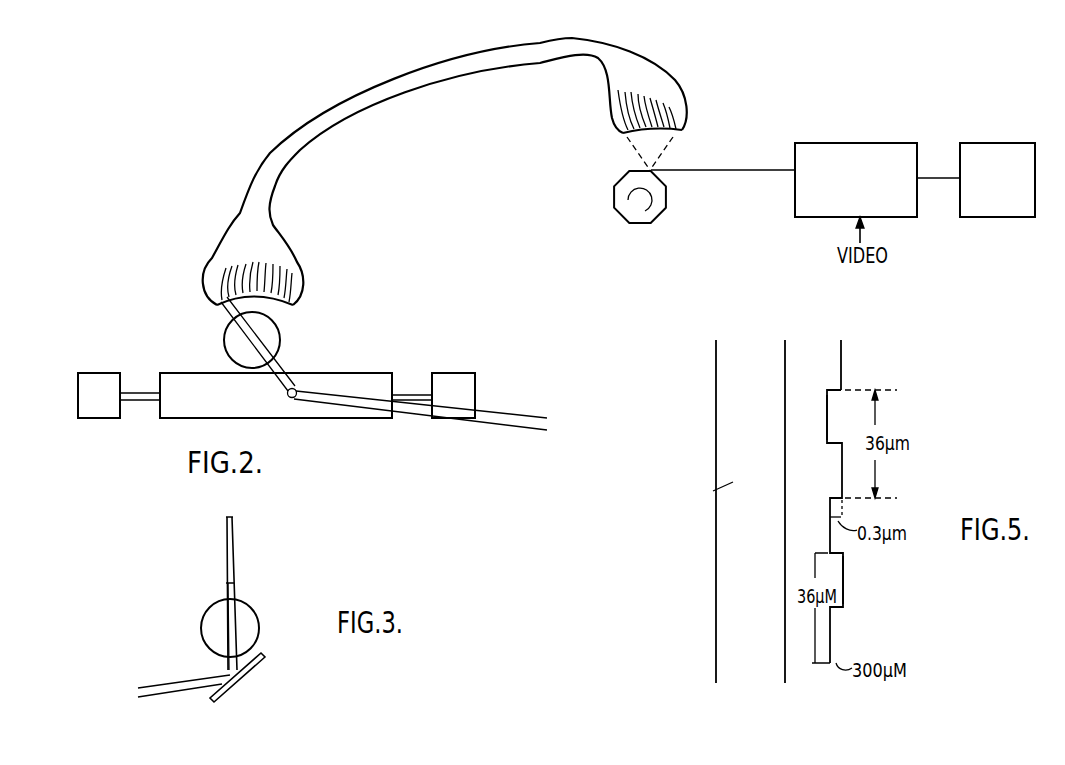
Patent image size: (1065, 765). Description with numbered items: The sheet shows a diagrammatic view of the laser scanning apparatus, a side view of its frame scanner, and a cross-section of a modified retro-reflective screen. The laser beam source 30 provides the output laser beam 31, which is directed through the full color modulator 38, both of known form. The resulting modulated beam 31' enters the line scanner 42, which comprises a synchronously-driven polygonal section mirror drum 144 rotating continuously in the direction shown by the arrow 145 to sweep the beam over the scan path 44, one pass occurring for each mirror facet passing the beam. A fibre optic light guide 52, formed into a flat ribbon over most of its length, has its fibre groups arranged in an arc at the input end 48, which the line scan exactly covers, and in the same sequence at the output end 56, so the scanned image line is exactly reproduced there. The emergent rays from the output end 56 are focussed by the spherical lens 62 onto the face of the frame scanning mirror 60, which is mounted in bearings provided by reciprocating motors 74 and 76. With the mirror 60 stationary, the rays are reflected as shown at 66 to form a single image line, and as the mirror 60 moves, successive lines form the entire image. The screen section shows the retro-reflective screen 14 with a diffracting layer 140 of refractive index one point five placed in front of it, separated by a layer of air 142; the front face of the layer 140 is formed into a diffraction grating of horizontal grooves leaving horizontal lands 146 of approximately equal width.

In FIG. 2, the fibre optic light guide 52 is at (433, 73).
In FIG. 3, the fibre optic light guide 52 is at (233, 522).
In FIG. 2, the output end of the light guide 56 is at (283, 305).
In FIG. 3, the output end of the light guide 56 is at (233, 565).
In FIG. 2, the scan path 44 is at (623, 135).
In FIG. 2, the input end of the light guide 48 is at (675, 137).
In FIG. 2, the line scanner 42 is at (648, 216).
In FIG. 2, the polygonal section mirror drum 144 is at (663, 203).
In FIG. 5, the polygonal section mirror drum 144 is at (838, 420).
In FIG. 2, the arrow 145 is at (637, 221).
In FIG. 2, the modulated beam 31' is at (723, 154).
In FIG. 2, the full color modulator 38 is at (850, 150).
In FIG. 2, the output laser beam 31 is at (938, 160).
In FIG. 2, the laser beam source 30 is at (998, 150).
In FIG. 2, the reciprocating motor 74 is at (98, 383).
In FIG. 2, the frame scanning mirror 60 is at (373, 380).
In FIG. 3, the frame scanning mirror 60 is at (263, 656).
In FIG. 2, the reciprocating motor 76 is at (465, 380).
In FIG. 2, the reflected beam 66 is at (503, 415).
In FIG. 3, the reflected beam 66 is at (166, 687).
In FIG. 2, the spherical lens 62 is at (277, 340).
In FIG. 3, the spherical lens 62 is at (257, 628).
In FIG. 5, the retro-reflective screen 14 is at (716, 422).
In FIG. 5, the layer of air 142 is at (758, 542).
In FIG. 5, the diffracting layer 140 is at (828, 366).
In FIG. 5, the horizontal lands 146 is at (843, 588).